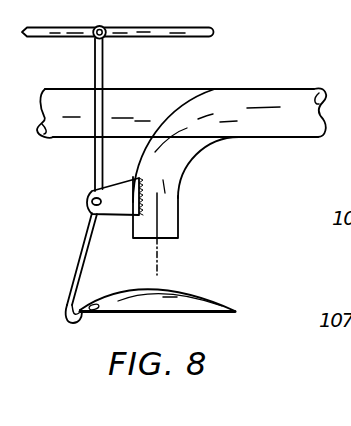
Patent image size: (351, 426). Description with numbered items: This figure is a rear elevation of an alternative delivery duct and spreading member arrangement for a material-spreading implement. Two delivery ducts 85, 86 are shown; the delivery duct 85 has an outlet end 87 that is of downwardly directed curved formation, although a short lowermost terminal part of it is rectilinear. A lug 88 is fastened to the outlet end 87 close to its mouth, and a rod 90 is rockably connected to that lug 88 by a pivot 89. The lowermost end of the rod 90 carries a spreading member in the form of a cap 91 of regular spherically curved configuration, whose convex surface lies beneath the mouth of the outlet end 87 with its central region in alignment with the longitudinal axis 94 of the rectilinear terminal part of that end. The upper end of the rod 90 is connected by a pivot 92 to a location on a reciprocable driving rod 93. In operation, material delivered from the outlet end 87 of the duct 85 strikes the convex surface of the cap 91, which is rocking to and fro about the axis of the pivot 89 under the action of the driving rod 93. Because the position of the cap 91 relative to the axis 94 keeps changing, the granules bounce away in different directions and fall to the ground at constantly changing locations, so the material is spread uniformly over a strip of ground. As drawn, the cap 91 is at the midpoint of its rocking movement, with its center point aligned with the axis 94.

The delivery duct 85 is at (275, 97).
The delivery duct 86 is at (61, 96).
The outlet end 87 is at (170, 211).
The lug 88 is at (122, 210).
The pivot 89 is at (90, 200).
The rod 90 is at (80, 259).
The cap 91 is at (180, 299).
The pivot 92 is at (100, 26).
The driving rod 93 is at (188, 12).
The longitudinal axis 94 is at (160, 263).